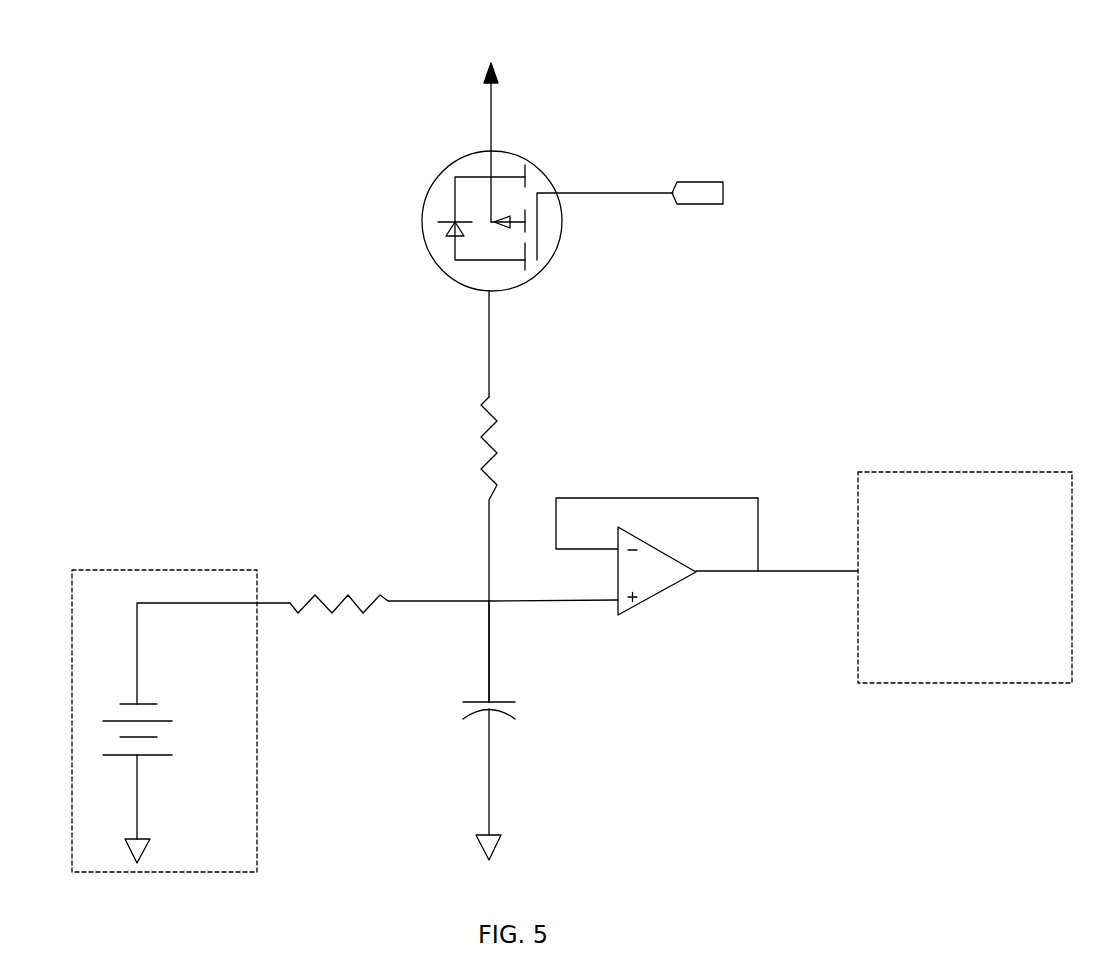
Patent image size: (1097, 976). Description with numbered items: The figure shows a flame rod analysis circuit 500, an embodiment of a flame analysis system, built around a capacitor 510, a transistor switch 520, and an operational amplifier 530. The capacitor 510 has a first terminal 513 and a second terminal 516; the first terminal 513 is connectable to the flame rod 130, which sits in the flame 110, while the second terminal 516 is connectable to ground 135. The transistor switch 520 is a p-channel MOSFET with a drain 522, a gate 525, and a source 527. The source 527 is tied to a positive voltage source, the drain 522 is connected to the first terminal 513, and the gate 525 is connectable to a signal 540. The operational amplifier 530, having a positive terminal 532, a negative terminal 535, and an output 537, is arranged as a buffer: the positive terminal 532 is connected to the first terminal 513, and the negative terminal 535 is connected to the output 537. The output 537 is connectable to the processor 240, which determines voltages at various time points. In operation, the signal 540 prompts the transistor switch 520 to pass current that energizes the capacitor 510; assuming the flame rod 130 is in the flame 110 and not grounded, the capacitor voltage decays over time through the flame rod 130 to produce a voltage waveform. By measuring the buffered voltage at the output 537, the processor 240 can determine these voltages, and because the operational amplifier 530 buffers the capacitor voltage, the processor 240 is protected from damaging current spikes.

The flame rod analysis circuit 500 is at (193, 155).
The transistor switch 520 is at (393, 215).
The source 527 is at (525, 132).
The gate 525 is at (588, 233).
The drain 522 is at (529, 328).
The signal 540 is at (700, 180).
The flame 110 is at (217, 801).
The flame rod 130 is at (338, 541).
The positive terminal 532 is at (555, 602).
The operational amplifier 530 is at (657, 578).
The negative terminal 535 is at (590, 549).
The output 537 is at (723, 571).
The processor 240 is at (990, 621).
The first terminal 513 is at (487, 687).
The capacitor 510 is at (537, 710).
The second terminal 516 is at (487, 800).
The ground 135 is at (142, 857).